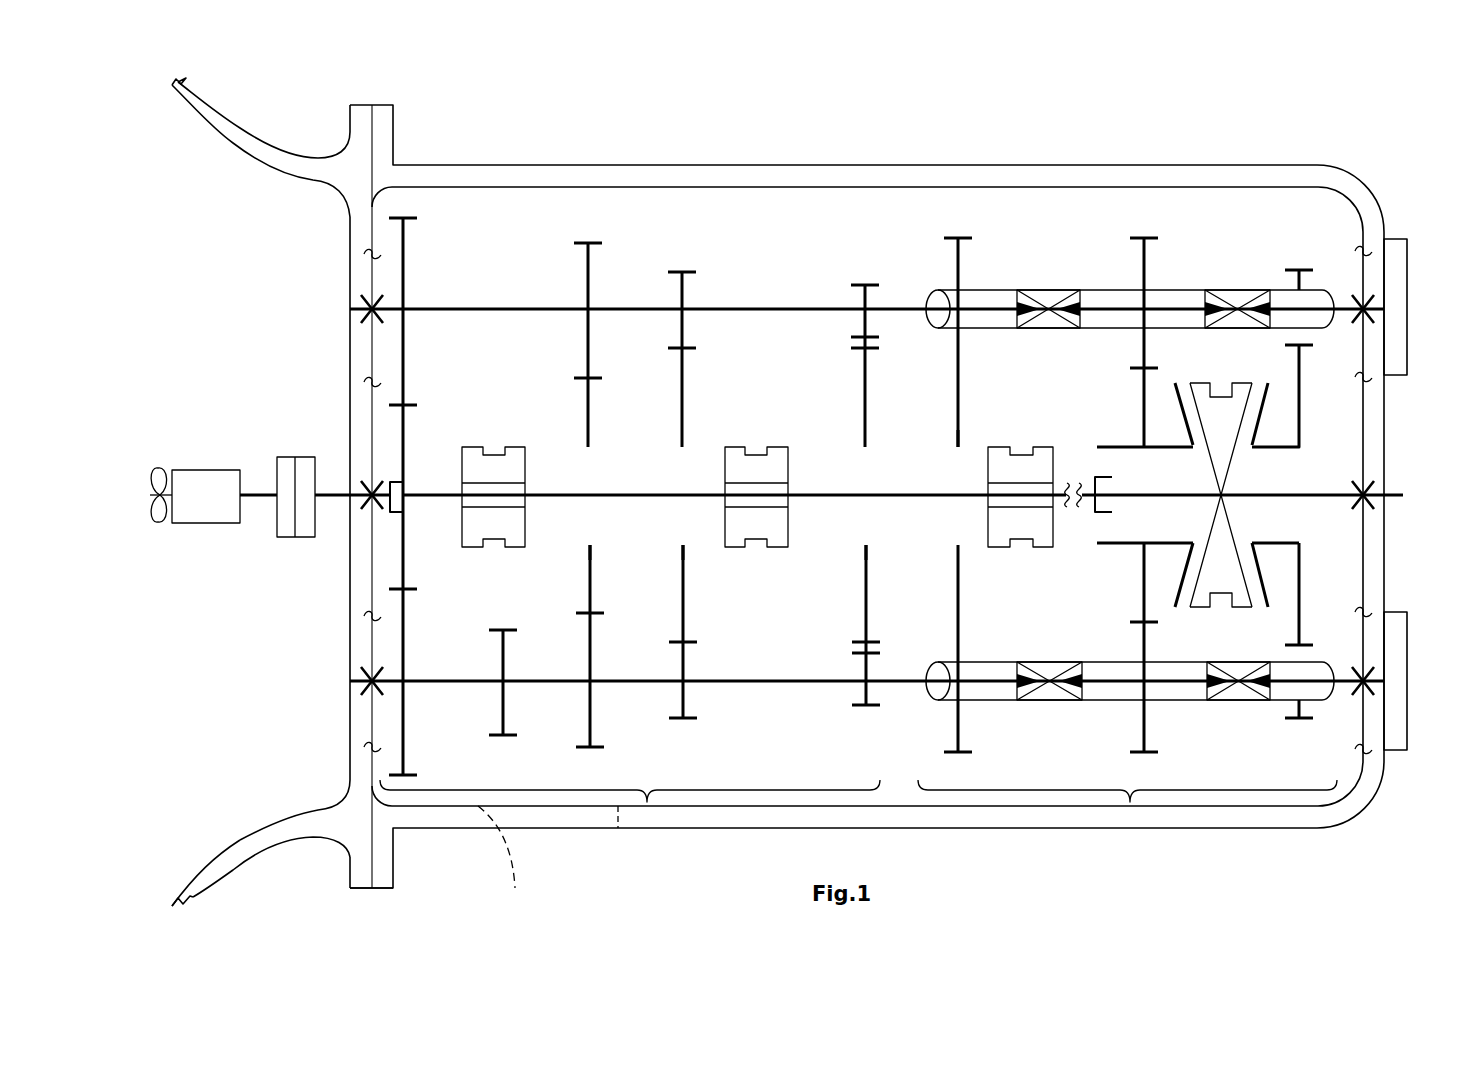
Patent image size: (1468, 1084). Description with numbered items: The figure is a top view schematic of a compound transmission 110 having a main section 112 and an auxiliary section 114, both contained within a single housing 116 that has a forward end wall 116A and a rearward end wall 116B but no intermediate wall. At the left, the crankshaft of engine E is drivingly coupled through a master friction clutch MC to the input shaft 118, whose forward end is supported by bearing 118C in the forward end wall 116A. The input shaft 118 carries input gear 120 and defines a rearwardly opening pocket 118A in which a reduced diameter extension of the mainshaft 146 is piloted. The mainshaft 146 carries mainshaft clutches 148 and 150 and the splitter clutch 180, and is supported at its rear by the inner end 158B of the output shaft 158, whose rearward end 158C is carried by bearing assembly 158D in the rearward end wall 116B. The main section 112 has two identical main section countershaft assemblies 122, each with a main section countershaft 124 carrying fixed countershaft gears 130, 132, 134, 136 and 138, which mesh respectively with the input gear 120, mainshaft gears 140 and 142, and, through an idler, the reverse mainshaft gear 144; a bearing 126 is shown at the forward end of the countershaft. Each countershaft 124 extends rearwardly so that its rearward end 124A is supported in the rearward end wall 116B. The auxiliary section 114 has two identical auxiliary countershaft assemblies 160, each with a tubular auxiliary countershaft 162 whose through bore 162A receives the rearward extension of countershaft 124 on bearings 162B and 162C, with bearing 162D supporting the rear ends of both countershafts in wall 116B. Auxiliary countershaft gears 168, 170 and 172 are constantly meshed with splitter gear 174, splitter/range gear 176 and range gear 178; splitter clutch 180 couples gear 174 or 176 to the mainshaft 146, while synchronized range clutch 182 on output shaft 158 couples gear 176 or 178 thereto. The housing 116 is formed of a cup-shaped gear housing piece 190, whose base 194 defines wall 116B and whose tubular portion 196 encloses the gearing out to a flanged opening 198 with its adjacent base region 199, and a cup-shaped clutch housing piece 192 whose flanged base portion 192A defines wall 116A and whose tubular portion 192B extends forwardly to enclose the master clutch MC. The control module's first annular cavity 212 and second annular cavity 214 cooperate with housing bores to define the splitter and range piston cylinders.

The transmission 110 is at (1157, 213).
The main section 112 is at (647, 802).
The auxiliary section 114 is at (1130, 802).
The housing 116 is at (759, 165).
The forward end wall 116A is at (350, 360).
The rearward end wall 116B is at (1366, 275).
The input shaft 118 is at (322, 505).
The rearwardly opening pocket 118A is at (400, 512).
The bearing 118C is at (383, 500).
The input gear 120 is at (404, 475).
The main section countershaft assembly 122 is at (766, 272).
The main section countershaft 124 is at (633, 683).
The rearward end of main section countershaft 124A is at (1340, 690).
The bearing 126 is at (366, 686).
The countershaft gear 130 is at (404, 265).
The countershaft gear 132 is at (503, 668).
The countershaft gear 134 is at (588, 293).
The countershaft gear 136 is at (682, 300).
The countershaft gear 138 is at (865, 300).
The mainshaft gear 140 is at (590, 405).
The mainshaft gear 142 is at (683, 433).
The reverse mainshaft gear 144 is at (866, 427).
The mainshaft 146 is at (614, 466).
The mainshaft clutch 148 is at (490, 445).
The mainshaft clutch 150 is at (758, 445).
The output shaft 158 is at (1277, 495).
The inner end of output shaft 158B is at (1115, 488).
The rearward end of output shaft 158C is at (1390, 497).
The bearing assembly 158D is at (1375, 478).
The auxiliary countershaft assembly 160 is at (1130, 468).
The auxiliary countershaft 162 is at (1110, 290).
The through bore 162A is at (1105, 660).
The bearing or bushing 162B is at (1052, 298).
The bearing or bushing 162C is at (1238, 298).
The bearing 162D is at (1410, 662).
The auxiliary countershaft gear 168 is at (960, 280).
The auxiliary countershaft gear 170 is at (1146, 272).
The auxiliary countershaft gear 172 is at (1302, 283).
The splitter gear 174 is at (958, 430).
The splitter/range gear 176 is at (1143, 427).
The range gear 178 is at (1296, 353).
The splitter clutch 180 is at (1020, 447).
The synchronized range clutch 182 is at (1222, 540).
The gear housing piece 190 is at (981, 163).
The clutch housing piece 192 is at (255, 121).
The flanged base portion 192A is at (362, 787).
The tubular portion 192B is at (258, 838).
The base 194 is at (1375, 548).
The tubular portion 196 is at (858, 178).
The flanged opening 198 is at (398, 865).
The housing base 199 is at (347, 878).
The first forwardly opening annular cavity 212 is at (1400, 322).
The second forwardly opening annular cavity 214 is at (548, 860).
The engine E is at (190, 469).
The master friction clutch MC is at (289, 456).